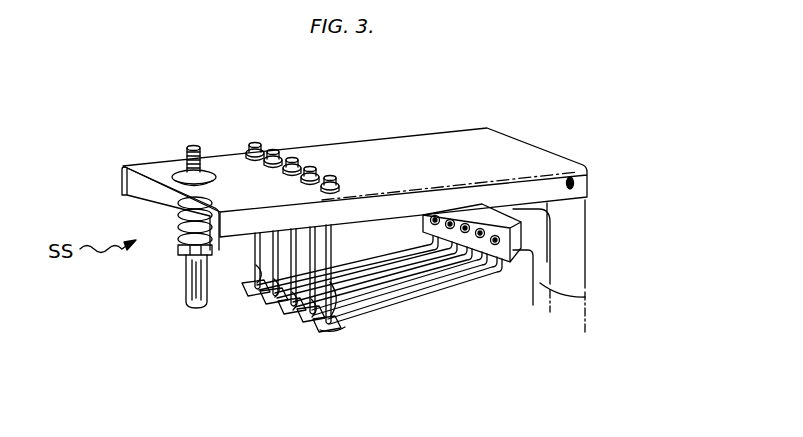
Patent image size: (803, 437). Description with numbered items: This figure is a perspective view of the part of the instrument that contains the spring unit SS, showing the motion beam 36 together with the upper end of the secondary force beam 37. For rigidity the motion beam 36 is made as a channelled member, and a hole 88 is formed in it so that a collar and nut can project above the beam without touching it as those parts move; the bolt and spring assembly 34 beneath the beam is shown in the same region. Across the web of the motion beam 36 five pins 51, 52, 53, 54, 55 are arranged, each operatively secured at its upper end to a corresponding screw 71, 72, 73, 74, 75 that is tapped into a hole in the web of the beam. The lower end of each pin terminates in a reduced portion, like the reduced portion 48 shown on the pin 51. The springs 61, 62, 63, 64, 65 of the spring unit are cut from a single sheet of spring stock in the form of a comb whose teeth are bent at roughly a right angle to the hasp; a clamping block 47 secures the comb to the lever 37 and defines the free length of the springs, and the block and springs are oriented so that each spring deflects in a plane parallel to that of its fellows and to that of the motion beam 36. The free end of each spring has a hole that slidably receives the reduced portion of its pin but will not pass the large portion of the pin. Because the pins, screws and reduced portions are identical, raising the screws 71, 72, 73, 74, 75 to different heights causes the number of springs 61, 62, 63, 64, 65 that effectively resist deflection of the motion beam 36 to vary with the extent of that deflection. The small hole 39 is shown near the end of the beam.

The bolt with spring 34 is at (197, 270).
The motion beam 36 is at (450, 164).
The secondary force beam 37 is at (585, 297).
The hole 39 is at (576, 181).
The clamping block 47 is at (540, 248).
The reduced portion 48 is at (327, 325).
The pin 51 is at (330, 328).
The pin 52 is at (250, 294).
The pin 53 is at (273, 307).
The pin 54 is at (293, 320).
The pin 55 is at (312, 325).
The spring 61 is at (357, 314).
The spring 62 is at (433, 250).
The spring 63 is at (453, 257).
The spring 64 is at (433, 272).
The spring 65 is at (407, 292).
The screw 71 is at (342, 183).
The screw 72 is at (245, 151).
The screw 73 is at (272, 157).
The screw 74 is at (306, 170).
The screw 75 is at (320, 173).
The hole 88 is at (177, 178).